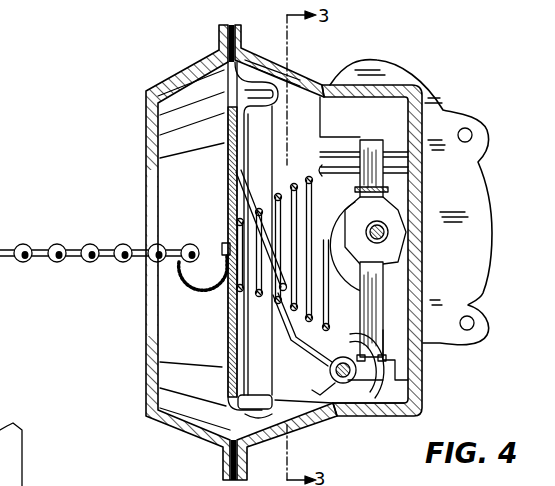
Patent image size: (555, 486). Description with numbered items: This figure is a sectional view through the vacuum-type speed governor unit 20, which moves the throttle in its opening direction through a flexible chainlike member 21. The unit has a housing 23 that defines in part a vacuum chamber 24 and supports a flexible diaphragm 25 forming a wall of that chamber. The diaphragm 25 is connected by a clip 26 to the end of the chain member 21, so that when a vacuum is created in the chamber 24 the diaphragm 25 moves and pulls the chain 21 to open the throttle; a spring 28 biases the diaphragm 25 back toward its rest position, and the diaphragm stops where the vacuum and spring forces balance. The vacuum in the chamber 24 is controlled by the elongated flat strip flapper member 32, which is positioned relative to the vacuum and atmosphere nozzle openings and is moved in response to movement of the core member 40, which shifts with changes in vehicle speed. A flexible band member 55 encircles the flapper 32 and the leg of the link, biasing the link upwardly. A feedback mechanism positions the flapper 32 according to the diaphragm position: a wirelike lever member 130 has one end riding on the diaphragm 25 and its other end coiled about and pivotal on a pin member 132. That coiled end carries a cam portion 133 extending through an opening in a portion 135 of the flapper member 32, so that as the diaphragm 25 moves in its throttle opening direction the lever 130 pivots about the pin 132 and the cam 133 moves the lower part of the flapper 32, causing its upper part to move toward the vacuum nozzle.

The speed governor unit 20 is at (152, 440).
The flexible chainlike member 21 is at (89, 263).
The housing 23 is at (303, 72).
The vacuum chamber 24 is at (342, 426).
The flexible diaphragm 25 is at (302, 404).
The clip 26 is at (181, 292).
The spring 28 is at (291, 186).
The flapper member 32 is at (432, 274).
The core member 40 is at (388, 235).
The flexible band member 55 is at (356, 189).
The lever member 130 is at (240, 197).
The pin member 132 is at (335, 371).
The cam portion 133 is at (357, 378).
The portion of the flapper member 135 is at (413, 379).